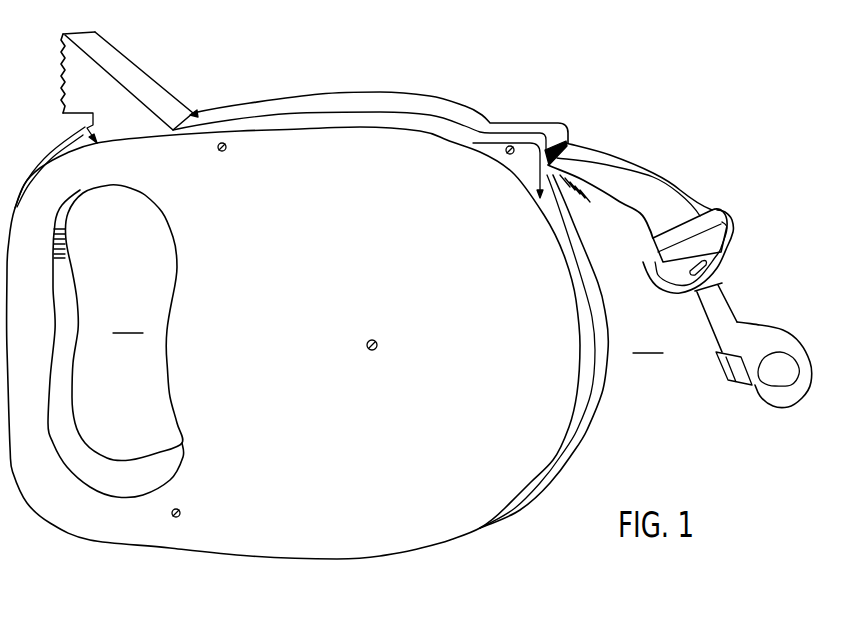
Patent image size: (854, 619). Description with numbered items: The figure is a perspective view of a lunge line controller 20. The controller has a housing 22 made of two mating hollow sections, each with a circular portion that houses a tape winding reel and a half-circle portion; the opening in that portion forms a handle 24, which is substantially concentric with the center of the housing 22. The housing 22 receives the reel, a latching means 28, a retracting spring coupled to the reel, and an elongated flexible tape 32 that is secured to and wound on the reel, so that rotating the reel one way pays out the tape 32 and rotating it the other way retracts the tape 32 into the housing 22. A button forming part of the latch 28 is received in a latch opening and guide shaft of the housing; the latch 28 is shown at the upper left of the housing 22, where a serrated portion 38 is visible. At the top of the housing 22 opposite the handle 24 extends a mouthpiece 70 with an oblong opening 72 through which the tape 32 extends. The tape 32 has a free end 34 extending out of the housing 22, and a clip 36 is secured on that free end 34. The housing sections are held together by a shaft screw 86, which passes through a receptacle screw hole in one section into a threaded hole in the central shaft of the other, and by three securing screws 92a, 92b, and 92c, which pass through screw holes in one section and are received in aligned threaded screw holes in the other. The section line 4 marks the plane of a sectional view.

The lunge line controller 20 is at (396, 92).
The housing 22 is at (555, 408).
The handle 24 is at (34, 393).
The latching means 28 is at (135, 85).
The elongated flexible tape 32 is at (688, 197).
The free end 34 is at (692, 230).
The clip 36 is at (724, 317).
The serrated end of brake lever 38 is at (109, 45).
The mouthpiece 70 is at (563, 137).
The oblong opening 72 is at (645, 172).
The shaft screw 86 is at (377, 348).
The securing screw 92a is at (224, 150).
The securing screw 92b is at (181, 514).
The securing screw 92c is at (511, 146).
The section line 4- 4 is at (123, 323).